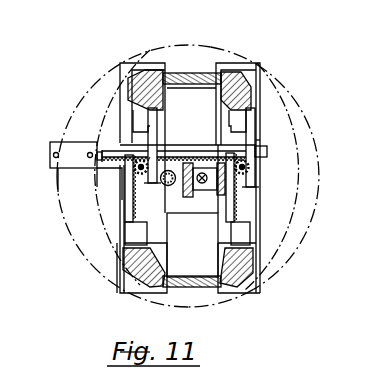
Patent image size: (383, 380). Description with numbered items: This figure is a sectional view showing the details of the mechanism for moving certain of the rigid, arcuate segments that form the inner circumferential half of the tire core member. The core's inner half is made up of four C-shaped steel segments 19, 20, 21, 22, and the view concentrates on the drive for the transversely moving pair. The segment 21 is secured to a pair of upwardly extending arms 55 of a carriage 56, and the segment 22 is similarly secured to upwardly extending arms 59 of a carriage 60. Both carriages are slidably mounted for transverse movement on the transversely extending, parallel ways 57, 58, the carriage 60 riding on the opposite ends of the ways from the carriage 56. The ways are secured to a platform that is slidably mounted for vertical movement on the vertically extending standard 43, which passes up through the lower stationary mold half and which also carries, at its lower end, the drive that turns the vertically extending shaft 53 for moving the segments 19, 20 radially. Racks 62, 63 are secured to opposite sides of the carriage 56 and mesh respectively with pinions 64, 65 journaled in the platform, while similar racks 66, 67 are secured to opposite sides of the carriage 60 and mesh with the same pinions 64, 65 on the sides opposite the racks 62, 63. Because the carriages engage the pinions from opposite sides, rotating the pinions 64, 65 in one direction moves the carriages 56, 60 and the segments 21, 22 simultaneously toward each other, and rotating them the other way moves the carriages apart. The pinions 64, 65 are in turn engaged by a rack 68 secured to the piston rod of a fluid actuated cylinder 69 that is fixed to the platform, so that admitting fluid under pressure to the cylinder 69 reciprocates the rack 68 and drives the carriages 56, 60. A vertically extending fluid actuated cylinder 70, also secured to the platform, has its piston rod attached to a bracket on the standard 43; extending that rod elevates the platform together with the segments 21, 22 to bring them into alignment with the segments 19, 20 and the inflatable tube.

The arcuate segment 19 is at (88, 272).
The arcuate segment 20 is at (304, 240).
The arcuate segment 21 is at (161, 49).
The arcuate segment 22 is at (243, 303).
The standard 43 is at (192, 245).
The shaft 53 is at (190, 188).
The upwardly extending arms 55 is at (165, 92).
The carriage 56 is at (210, 72).
The way 57 is at (138, 120).
The way 58 is at (247, 120).
The upwardly extending arms 59 is at (218, 268).
The carriage 60 is at (162, 296).
The rack 62 is at (157, 136).
The rack 63 is at (259, 142).
The pinion 64 is at (126, 186).
The pinion 65 is at (256, 186).
The rack 66 is at (240, 224).
The rack 67 is at (127, 212).
The rack 68 is at (267, 154).
The fluid actuated cylinder 69 is at (52, 168).
The fluid actuated cylinder 70 is at (169, 186).